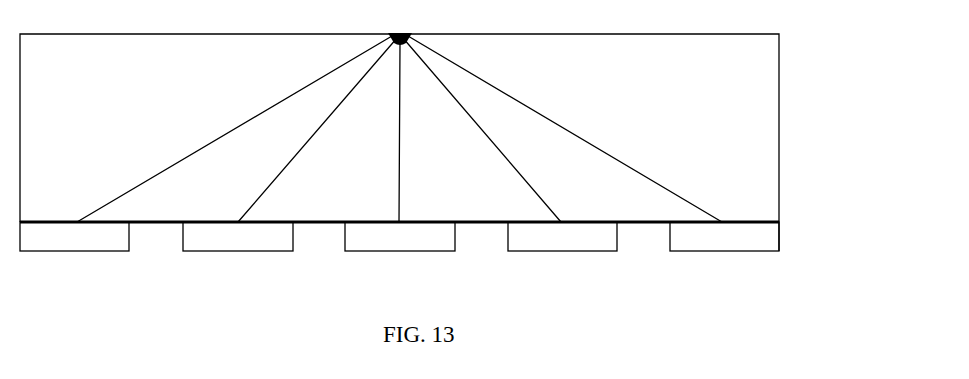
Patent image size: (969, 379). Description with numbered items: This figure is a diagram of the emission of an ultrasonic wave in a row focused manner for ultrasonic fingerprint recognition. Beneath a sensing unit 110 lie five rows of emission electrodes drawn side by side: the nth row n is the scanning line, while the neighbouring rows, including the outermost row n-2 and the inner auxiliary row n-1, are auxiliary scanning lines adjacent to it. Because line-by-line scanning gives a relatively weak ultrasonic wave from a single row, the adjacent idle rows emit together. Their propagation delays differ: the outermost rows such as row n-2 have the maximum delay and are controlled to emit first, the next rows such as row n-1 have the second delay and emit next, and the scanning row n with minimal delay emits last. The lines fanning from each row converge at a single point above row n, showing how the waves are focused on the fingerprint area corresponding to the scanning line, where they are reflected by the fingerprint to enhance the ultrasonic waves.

The sensing unit 110 is at (779, 252).
The (n−2) row of emission electrodes n-2 is at (74, 250).
The (n−1) row of emission electrodes n-1 is at (238, 250).
The nth row of emission electrodes n is at (400, 250).